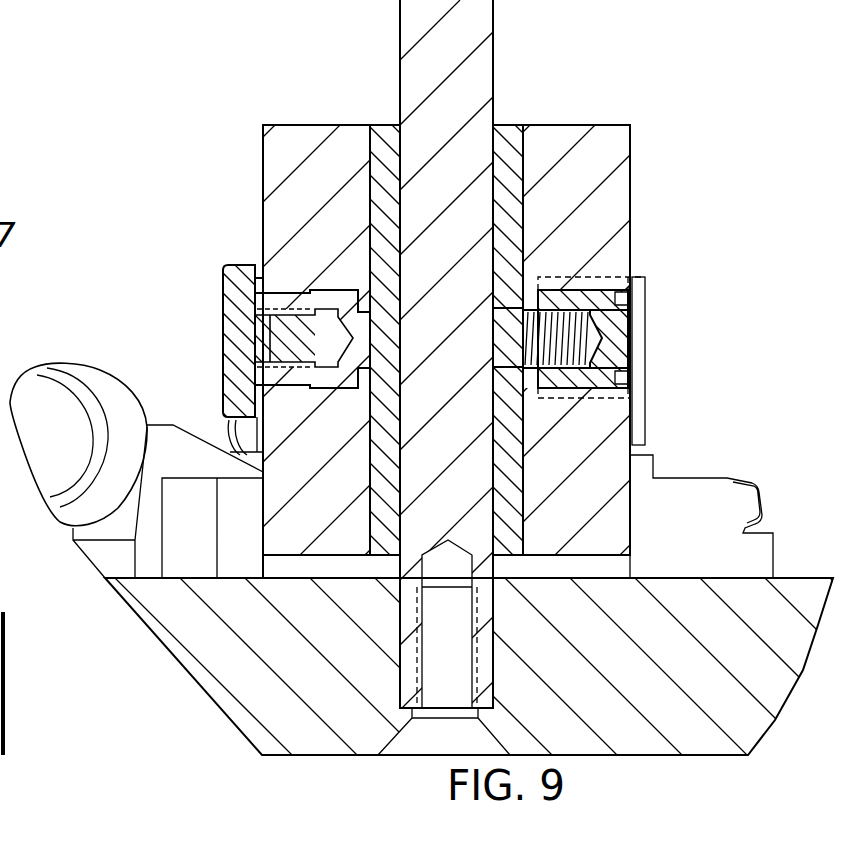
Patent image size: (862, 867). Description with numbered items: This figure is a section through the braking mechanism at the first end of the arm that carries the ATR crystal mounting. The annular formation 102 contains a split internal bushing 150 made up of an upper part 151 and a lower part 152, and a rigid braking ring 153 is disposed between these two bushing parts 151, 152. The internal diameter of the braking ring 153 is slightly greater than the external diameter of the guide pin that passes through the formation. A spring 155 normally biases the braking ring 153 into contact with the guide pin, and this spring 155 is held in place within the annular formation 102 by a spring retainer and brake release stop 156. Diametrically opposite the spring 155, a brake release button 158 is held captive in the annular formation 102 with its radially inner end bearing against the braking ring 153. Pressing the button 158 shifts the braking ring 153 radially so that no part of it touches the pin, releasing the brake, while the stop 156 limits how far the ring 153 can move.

The annular formation 102 is at (334, 125).
The split internal bushing 150 is at (530, 150).
The upper bushing part 151 is at (512, 193).
The lower bushing part 152 is at (512, 458).
The braking ring 153 is at (360, 288).
The spring 155 is at (612, 287).
The spring retainer and brake release stop 156 is at (633, 352).
The brake release button 158 is at (223, 330).